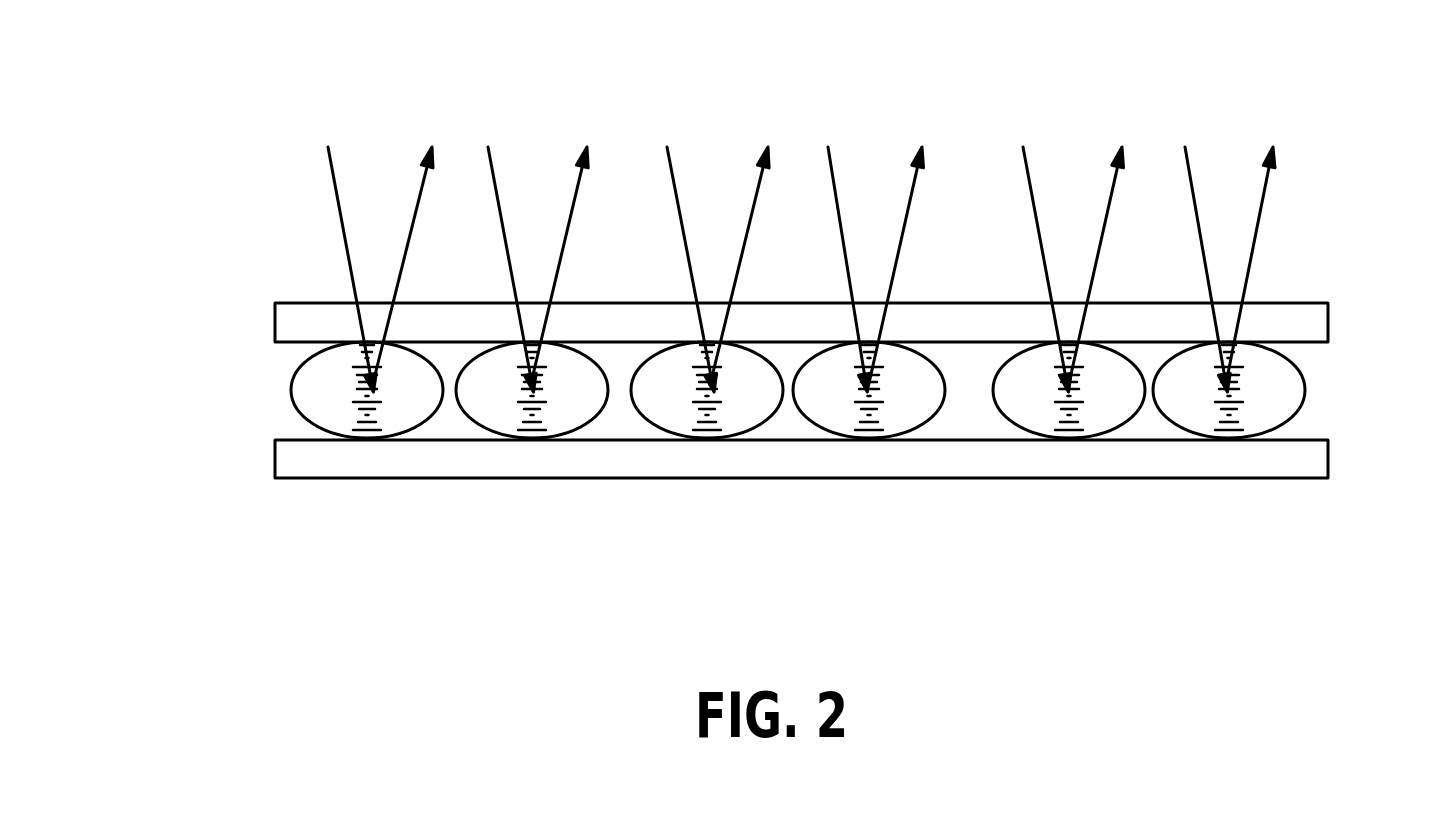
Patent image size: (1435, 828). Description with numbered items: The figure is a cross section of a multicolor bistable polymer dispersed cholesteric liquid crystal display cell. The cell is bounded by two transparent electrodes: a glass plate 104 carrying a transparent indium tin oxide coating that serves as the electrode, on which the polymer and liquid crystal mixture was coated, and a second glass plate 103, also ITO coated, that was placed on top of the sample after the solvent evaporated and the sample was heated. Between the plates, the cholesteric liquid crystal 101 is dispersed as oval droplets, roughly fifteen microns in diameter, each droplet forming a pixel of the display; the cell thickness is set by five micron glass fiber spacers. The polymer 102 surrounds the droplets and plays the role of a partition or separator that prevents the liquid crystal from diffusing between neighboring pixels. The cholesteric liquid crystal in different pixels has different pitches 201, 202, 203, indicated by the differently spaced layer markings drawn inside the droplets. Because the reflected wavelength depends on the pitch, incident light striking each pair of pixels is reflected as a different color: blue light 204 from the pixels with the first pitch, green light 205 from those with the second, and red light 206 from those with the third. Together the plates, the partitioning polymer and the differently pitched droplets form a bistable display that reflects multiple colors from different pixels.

The cholesteric liquid crystal 101 is at (1287, 390).
The polymer 102 is at (292, 360).
The second glass plate 103 is at (277, 320).
The glass plate 104 is at (293, 453).
The pitch 201 is at (388, 413).
The pitch 202 is at (723, 425).
The pitch 203 is at (1070, 427).
The blue light 204 is at (458, 223).
The green light 205 is at (813, 223).
The red light 206 is at (1170, 223).